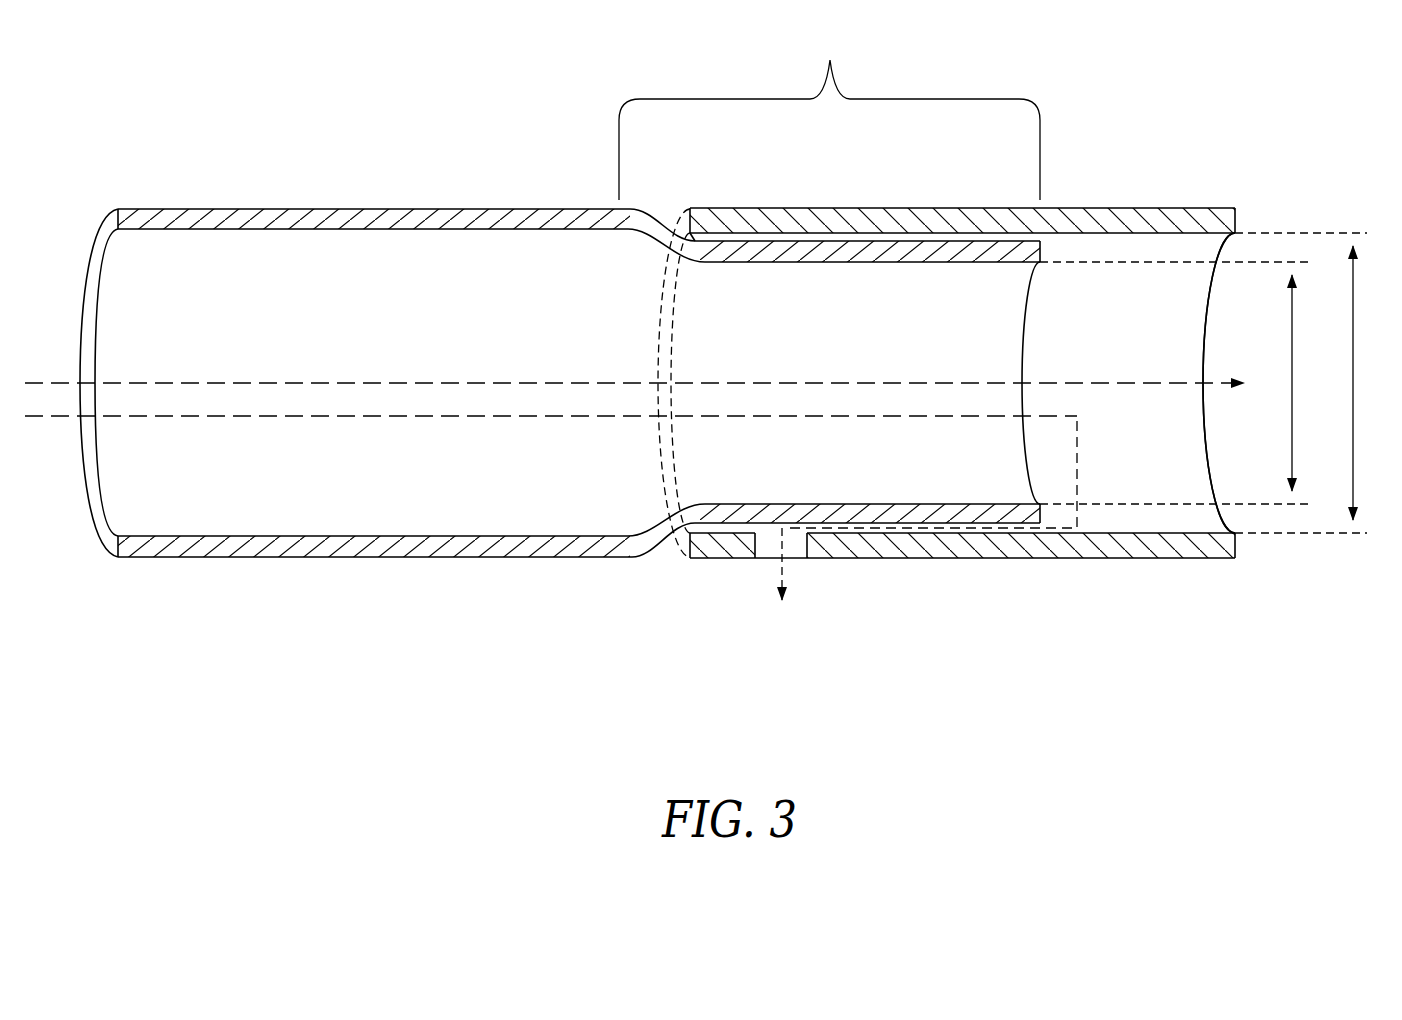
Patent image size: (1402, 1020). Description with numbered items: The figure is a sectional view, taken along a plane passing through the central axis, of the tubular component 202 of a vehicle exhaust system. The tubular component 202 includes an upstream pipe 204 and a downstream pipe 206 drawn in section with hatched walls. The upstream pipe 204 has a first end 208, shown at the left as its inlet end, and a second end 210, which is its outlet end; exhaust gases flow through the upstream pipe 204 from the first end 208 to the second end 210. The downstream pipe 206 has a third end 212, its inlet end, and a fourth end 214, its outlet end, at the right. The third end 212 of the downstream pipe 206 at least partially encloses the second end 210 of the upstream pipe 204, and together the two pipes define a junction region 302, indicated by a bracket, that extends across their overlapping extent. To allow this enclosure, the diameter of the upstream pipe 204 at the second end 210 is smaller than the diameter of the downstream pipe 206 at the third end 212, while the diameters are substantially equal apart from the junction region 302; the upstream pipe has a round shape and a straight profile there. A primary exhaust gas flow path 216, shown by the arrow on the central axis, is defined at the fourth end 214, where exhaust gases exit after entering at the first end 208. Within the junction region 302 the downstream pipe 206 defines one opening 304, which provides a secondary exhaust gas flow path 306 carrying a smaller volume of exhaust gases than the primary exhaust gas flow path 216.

The tubular component 202 is at (706, 356).
The upstream pipe 204 is at (262, 569).
The downstream pipe 206 is at (925, 569).
The first end 208 is at (83, 488).
The second end 210 is at (1035, 452).
The third end 212 is at (680, 216).
The fourth end 214 is at (1220, 413).
The primary exhaust gas flow path 216 is at (1217, 383).
The junction region 302 is at (829, 115).
The opening 304 is at (767, 550).
The secondary exhaust gas flow path 306 is at (785, 578).